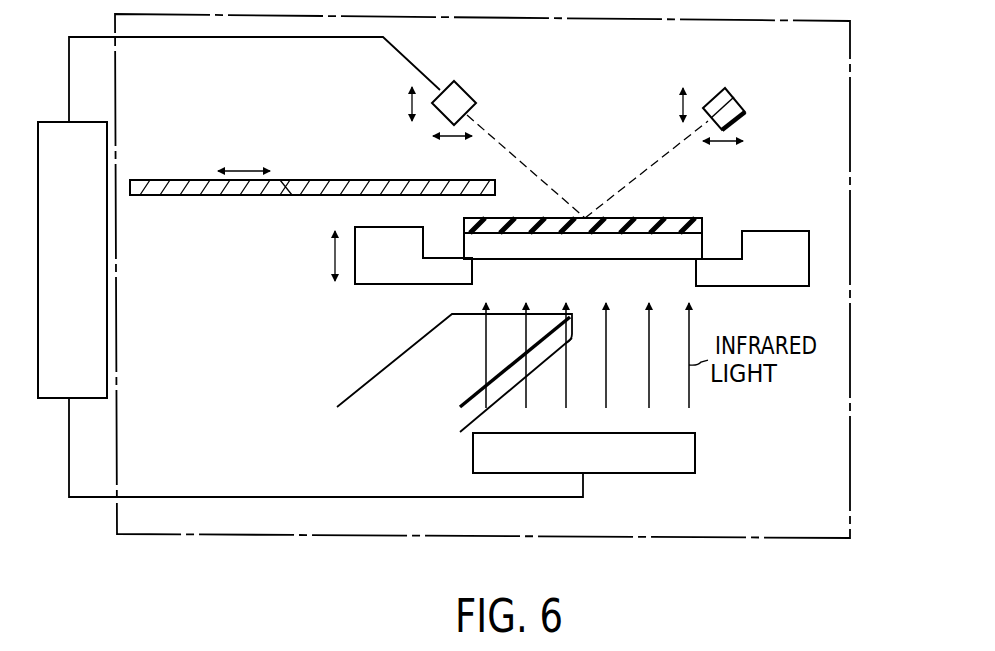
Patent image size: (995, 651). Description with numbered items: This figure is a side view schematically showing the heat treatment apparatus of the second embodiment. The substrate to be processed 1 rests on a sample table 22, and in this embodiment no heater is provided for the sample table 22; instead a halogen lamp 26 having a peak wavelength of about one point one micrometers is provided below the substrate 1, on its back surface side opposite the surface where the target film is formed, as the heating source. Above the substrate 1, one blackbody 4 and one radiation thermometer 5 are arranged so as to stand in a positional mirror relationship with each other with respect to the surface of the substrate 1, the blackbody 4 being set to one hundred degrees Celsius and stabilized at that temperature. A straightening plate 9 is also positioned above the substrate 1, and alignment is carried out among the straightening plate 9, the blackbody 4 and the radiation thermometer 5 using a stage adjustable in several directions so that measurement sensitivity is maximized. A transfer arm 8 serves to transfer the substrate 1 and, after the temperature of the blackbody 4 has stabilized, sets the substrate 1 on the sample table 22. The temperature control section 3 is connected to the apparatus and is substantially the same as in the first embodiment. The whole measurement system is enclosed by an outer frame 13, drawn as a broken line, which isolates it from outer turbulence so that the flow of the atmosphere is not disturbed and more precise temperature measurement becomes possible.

The substrate to be processed 1 is at (702, 245).
The temperature control section 3 is at (47, 121).
The blackbody 4 is at (737, 97).
The radiation thermometer 5 is at (468, 80).
The transfer arm 8 is at (406, 352).
The straightening plate 9 is at (182, 180).
The outer frame 13 is at (850, 475).
The sample table 22 is at (776, 231).
The halogen lamp 26 is at (695, 455).